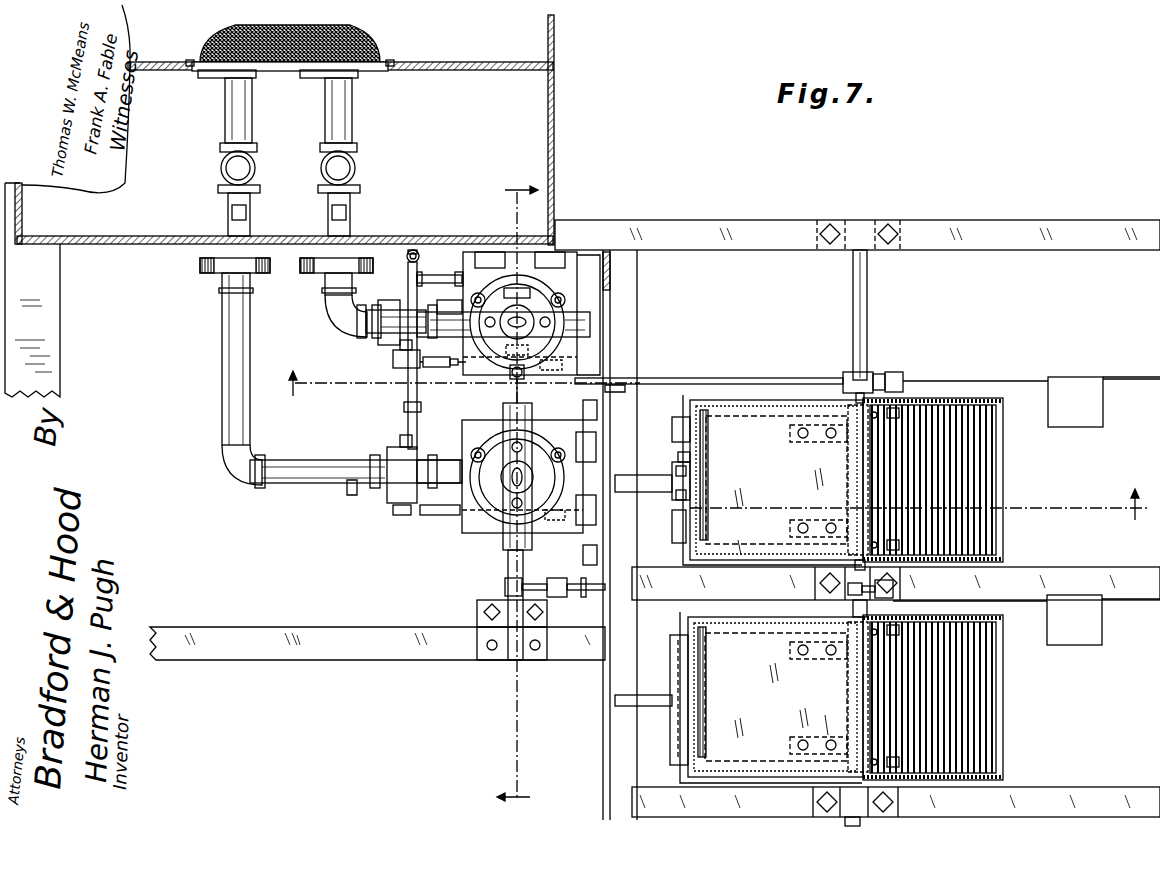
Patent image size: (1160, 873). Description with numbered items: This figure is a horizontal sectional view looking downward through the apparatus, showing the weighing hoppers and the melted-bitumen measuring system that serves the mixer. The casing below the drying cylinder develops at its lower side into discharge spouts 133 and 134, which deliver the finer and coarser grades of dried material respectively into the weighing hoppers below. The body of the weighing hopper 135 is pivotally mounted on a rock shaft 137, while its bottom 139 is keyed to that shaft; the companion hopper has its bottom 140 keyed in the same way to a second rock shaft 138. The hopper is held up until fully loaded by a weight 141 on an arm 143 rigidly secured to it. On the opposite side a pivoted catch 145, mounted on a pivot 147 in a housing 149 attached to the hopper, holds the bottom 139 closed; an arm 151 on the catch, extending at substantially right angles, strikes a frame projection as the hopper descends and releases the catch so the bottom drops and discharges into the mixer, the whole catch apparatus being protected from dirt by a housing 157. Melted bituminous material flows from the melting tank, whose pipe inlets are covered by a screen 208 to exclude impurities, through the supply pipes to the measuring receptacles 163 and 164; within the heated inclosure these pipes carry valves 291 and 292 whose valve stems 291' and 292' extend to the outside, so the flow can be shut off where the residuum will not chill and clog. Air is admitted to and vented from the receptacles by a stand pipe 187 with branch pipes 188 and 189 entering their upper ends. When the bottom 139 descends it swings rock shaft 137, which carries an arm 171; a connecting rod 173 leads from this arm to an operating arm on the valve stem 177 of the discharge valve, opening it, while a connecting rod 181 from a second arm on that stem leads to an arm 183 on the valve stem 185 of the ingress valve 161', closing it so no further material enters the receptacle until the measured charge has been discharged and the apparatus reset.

The screen 208 is at (372, 46).
The valve 292 is at (210, 185).
The valve stem 292' is at (210, 291).
The valve 291 is at (363, 185).
The valve stem 291' is at (348, 282).
The valve 161' is at (365, 341).
The stand pipe 187 is at (413, 248).
The branch pipe 188 is at (413, 428).
The branch pipe 189 is at (440, 292).
The valve stem 185 is at (400, 370).
The arm 183 is at (442, 353).
The connecting rod 181 is at (443, 375).
The measuring receptacle 163 is at (577, 287).
The measuring receptacle 164 is at (463, 530).
The valve stem 177 is at (514, 373).
The rock shaft 137 is at (862, 322).
The connecting rod 173 is at (716, 377).
The arm 171 is at (903, 382).
The bottom 139 is at (773, 480).
The bottom 140 is at (771, 697).
The weighing hopper body 135 is at (1000, 530).
The discharge spout 133 is at (970, 708).
The discharge spout 134 is at (975, 475).
The weight 141 is at (1086, 428).
The arm 143 is at (1147, 405).
The housing 157 is at (681, 418).
The pivot 147 is at (680, 455).
The catch 145 is at (680, 476).
The housing 149 is at (678, 495).
The arm 151 is at (625, 493).
The rock shaft 138 is at (862, 823).